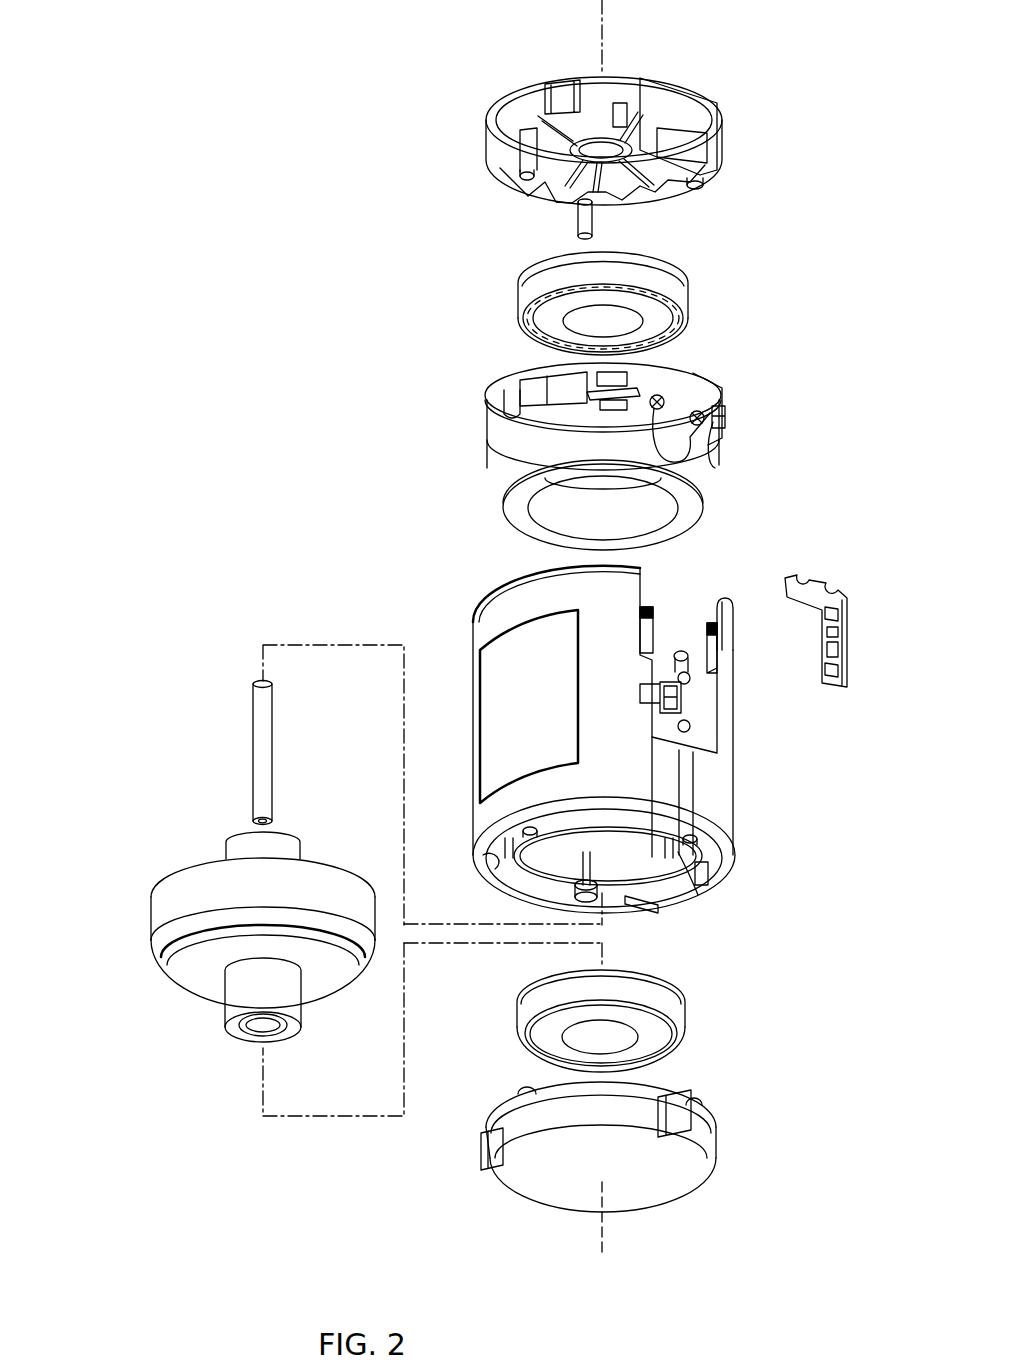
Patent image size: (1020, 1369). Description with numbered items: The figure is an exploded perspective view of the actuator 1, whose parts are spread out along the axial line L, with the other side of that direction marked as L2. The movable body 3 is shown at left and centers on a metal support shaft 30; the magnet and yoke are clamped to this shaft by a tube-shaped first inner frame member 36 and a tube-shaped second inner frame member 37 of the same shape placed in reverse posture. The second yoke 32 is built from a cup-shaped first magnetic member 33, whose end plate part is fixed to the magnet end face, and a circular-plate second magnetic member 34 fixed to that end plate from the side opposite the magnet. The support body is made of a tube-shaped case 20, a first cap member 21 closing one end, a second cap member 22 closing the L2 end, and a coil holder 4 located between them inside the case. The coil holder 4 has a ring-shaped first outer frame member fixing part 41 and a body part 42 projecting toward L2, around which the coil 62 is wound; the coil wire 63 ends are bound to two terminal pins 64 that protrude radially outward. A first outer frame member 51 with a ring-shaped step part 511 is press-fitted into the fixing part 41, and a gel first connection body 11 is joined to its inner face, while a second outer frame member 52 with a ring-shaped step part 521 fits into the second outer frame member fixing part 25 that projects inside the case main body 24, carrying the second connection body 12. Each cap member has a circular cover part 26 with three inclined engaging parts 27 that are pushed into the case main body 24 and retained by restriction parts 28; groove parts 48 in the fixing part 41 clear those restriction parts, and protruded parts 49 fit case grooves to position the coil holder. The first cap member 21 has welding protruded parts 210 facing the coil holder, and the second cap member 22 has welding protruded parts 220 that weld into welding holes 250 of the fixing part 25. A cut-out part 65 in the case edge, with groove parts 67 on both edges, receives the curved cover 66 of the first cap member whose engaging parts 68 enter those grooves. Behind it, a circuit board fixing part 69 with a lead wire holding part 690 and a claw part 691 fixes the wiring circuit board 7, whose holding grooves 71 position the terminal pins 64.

The actuator 1 is at (246, 130).
The movable body 3 is at (158, 780).
The coil holder 4 is at (736, 435).
The wiring circuit board 7 is at (853, 607).
The first connection body 11 is at (635, 297).
The second connection body 12 is at (655, 1038).
The case 20 is at (742, 812).
The first cap member 21 is at (724, 112).
The second cap member 22 is at (722, 1144).
The case main body 24 is at (728, 786).
The second outer frame member fixing part 25 is at (655, 861).
The cover part 26 is at (532, 93).
The engaging part 27 is at (562, 95).
The restriction part 28 is at (485, 866).
The support shaft 30 is at (251, 745).
The second yoke 32 is at (97, 985).
The first magnetic member 33 is at (150, 922).
The second magnetic member 34 is at (176, 968).
The first inner frame member 36 is at (226, 848).
The second inner frame member 37 is at (232, 1000).
The first outer frame member fixing part 41 is at (494, 455).
The body part 42 is at (700, 512).
The groove part 48 is at (556, 380).
The protruded part 49 is at (612, 375).
The first outer frame member 51 is at (690, 294).
The second outer frame member 52 is at (690, 1013).
The coil 62 is at (512, 474).
The coil wire 63 is at (705, 465).
The terminal pin 64 is at (697, 412).
The cut-out part 65 is at (724, 600).
The cover 66 is at (700, 129).
The groove part 67 is at (647, 625).
The engaging part 68 is at (641, 165).
The circuit board fixing part 69 is at (710, 716).
The holding groove 71 is at (799, 577).
The welding protruded part 210 is at (697, 187).
The welding protruded part 220 is at (523, 1086).
The welding hole 250 is at (523, 832).
The ring-shaped step part 511 is at (690, 310).
The ring-shaped step part 521 is at (640, 986).
The lead wire holding part 690 is at (662, 712).
The claw part 691 is at (682, 651).
The axial line L is at (610, 28).
The other side in the axial line direction L2 is at (606, 1238).